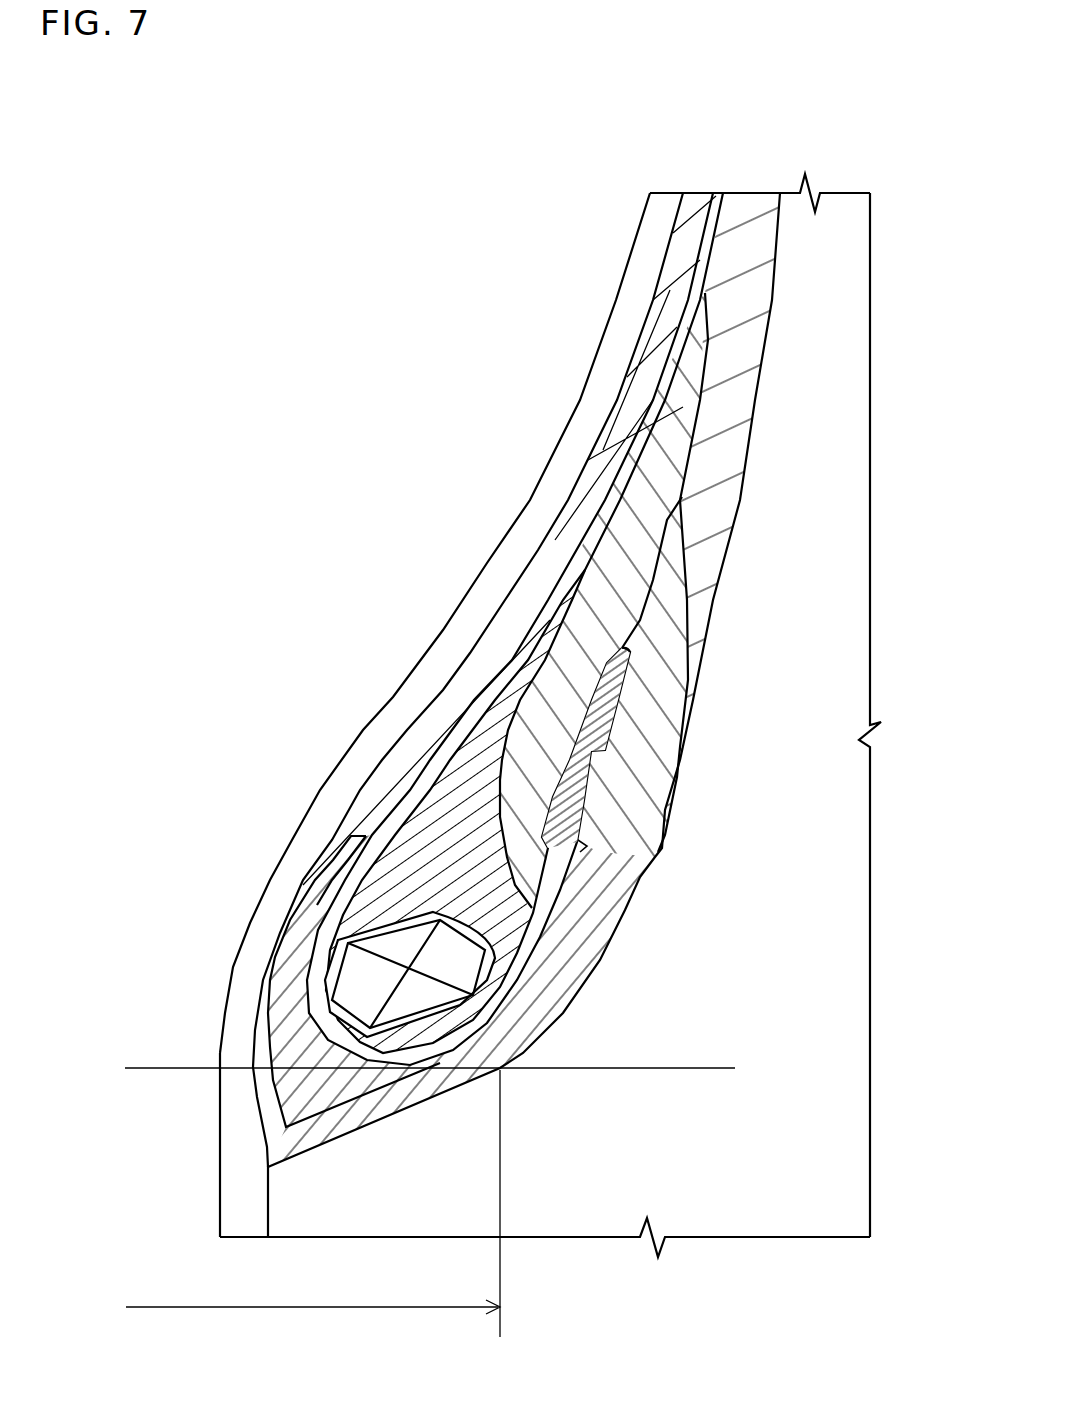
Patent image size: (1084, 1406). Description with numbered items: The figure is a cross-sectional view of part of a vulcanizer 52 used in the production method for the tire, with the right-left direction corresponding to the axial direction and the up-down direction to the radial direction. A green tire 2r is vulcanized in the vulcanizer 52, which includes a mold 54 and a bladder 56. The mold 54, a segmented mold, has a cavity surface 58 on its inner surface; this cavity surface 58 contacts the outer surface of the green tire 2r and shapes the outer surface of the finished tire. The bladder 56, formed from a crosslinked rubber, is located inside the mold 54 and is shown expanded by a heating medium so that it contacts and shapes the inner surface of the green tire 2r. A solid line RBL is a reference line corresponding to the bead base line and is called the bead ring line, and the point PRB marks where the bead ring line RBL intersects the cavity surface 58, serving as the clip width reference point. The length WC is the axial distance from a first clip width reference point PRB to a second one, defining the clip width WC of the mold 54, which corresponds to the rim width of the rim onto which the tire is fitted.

The green tire 2r is at (720, 185).
The vulcanizer 52 is at (837, 166).
The mold 54 is at (878, 270).
The bladder 56 is at (583, 442).
The cavity surface 58 is at (763, 362).
The bead ring line RBL is at (160, 1062).
The clip width reference point PRB is at (505, 1072).
The clip width WC is at (313, 1203).